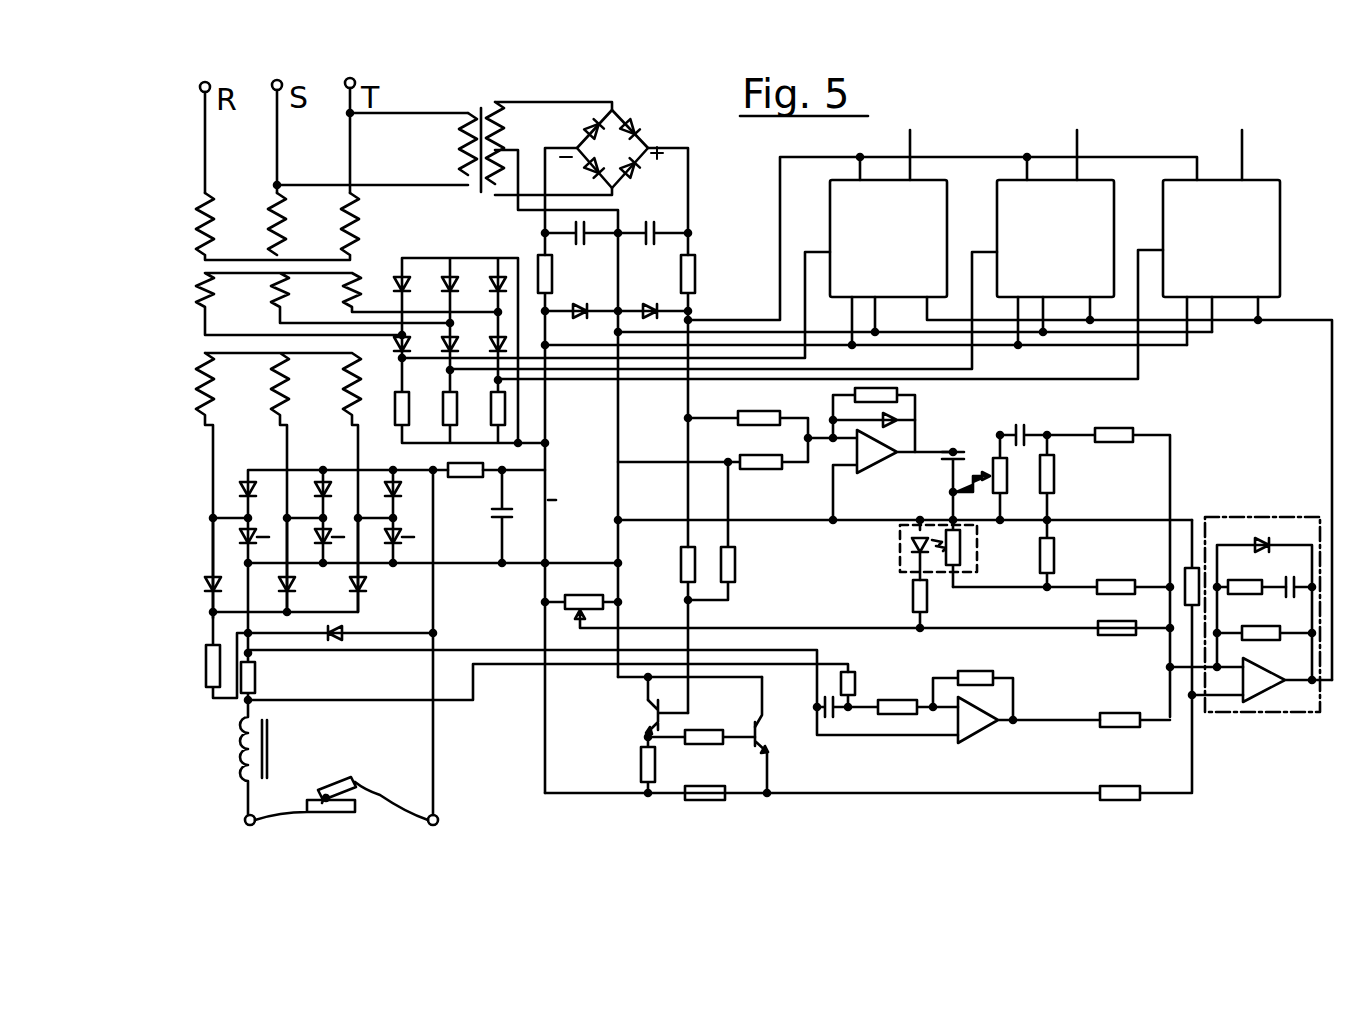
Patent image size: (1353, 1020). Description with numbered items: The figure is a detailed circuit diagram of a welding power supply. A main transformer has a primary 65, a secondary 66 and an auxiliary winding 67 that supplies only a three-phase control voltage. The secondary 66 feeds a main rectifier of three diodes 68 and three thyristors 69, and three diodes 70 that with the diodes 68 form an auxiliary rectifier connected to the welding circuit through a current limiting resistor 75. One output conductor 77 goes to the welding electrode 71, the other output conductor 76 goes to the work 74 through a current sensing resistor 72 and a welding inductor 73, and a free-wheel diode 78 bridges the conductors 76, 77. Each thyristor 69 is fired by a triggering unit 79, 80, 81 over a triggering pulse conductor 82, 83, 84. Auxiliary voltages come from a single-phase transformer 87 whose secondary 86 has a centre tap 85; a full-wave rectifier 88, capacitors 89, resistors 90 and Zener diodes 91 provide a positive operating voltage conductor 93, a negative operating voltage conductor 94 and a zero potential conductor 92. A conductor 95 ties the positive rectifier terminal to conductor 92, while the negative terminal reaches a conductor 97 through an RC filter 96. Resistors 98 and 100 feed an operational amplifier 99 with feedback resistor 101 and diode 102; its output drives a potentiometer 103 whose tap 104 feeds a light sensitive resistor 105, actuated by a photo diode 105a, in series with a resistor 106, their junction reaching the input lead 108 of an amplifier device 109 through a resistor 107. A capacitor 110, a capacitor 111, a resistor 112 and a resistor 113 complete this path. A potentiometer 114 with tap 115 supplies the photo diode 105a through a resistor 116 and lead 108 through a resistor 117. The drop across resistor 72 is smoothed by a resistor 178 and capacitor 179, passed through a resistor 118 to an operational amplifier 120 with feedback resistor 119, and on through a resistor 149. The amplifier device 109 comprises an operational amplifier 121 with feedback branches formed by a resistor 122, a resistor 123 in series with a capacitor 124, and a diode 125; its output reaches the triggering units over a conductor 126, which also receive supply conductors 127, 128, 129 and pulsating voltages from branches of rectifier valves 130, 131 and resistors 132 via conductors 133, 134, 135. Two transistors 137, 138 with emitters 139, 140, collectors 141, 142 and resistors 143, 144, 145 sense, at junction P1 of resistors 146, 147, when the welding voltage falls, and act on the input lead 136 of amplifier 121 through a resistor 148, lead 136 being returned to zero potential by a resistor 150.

The primary 65 is at (214, 205).
The secondary 66 is at (282, 400).
The auxiliary winding 67 is at (276, 286).
The diodes 68 is at (388, 487).
The thyristors 69 is at (390, 548).
The diodes 70 is at (222, 585).
The welding electrode 71 is at (342, 762).
The resistor 72 is at (262, 680).
The welding inductor 73 is at (270, 740).
The work 74 is at (332, 813).
The current limiting resistor 75 is at (212, 690).
The output conductor 76 is at (235, 620).
The output conductor 77 is at (436, 613).
The free-wheel diode 78 is at (345, 628).
The triggering unit 79 is at (830, 203).
The triggering unit 80 is at (997, 203).
The triggering unit 81 is at (1163, 203).
The triggering pulse conductor 82 is at (912, 142).
The triggering pulse conductor 83 is at (1079, 142).
The triggering pulse conductor 84 is at (1245, 142).
The centre tap 85 is at (500, 142).
The secondary 86 is at (485, 190).
The single-phase transformer 87 is at (480, 110).
The full-wave rectifier 88 is at (636, 148).
The capacitors 89 is at (588, 228).
The resistors 90 is at (553, 271).
The Zener diodes 91 is at (656, 306).
The zero potential conductor 92 is at (622, 400).
The positive operating voltage conductor 93 is at (684, 436).
The negative operating voltage conductor 94 is at (548, 420).
The conductor 95 is at (494, 520).
The smoothing RC filter 96 is at (465, 478).
The conductor 97 is at (575, 494).
The resistor 98 is at (760, 470).
The operational amplifier 99 is at (880, 460).
The resistor 100 is at (760, 410).
The resistor 101 is at (885, 394).
The diode 102 is at (900, 420).
The potentiometer 103 is at (1002, 432).
The tap 104 is at (965, 492).
The light sensitive resistor 105 is at (970, 552).
The photo diode 105a is at (905, 552).
The resistor 106 is at (1058, 556).
The resistor 107 is at (1122, 582).
The input lead 108 is at (1182, 664).
The amplifier device 109 is at (1230, 712).
The capacitor 110 is at (944, 462).
The capacitor 111 is at (1028, 428).
The resistor 112 is at (1056, 472).
The resistor 113 is at (1125, 428).
The potentiometer 114 is at (600, 596).
The tap 115 is at (572, 620).
The resistor 116 is at (910, 602).
The resistor 117 is at (1095, 635).
The series resistor 118 is at (905, 695).
The feed-back resistor 119 is at (990, 668).
The operational amplifier 120 is at (985, 722).
The operational amplifier 121 is at (1262, 700).
The resistor 122 is at (1275, 612).
The resistor 123 is at (1245, 580).
The capacitor 124 is at (1302, 575).
The diode 125 is at (1262, 535).
The conductor 126 is at (1332, 420).
The conductor 127 is at (770, 300).
The conductor 128 is at (608, 342).
The conductor 129 is at (696, 275).
The rectifier valve 130 is at (445, 278).
The rectifier valve 131 is at (395, 352).
The resistor 132 is at (485, 400).
The conductor 133 is at (800, 350).
The conductor 134 is at (975, 358).
The conductor 135 is at (1142, 358).
The input lead 136 is at (1220, 692).
The transistor 137 is at (656, 715).
The transistor 138 is at (760, 735).
The emitter 139 is at (652, 700).
The emitter 140 is at (763, 710).
The collector 141 is at (650, 725).
The collector 142 is at (770, 775).
The resistor 143 is at (640, 760).
The resistor 144 is at (680, 798).
The resistor 145 is at (710, 745).
The resistor 146 is at (682, 568).
The resistor 147 is at (736, 572).
The resistor 148 is at (1098, 797).
The resistor 149 is at (1120, 728).
The resistor 150 is at (1190, 560).
The resistor 178 is at (858, 680).
The capacitor 179 is at (836, 712).
The junction P1 is at (688, 602).